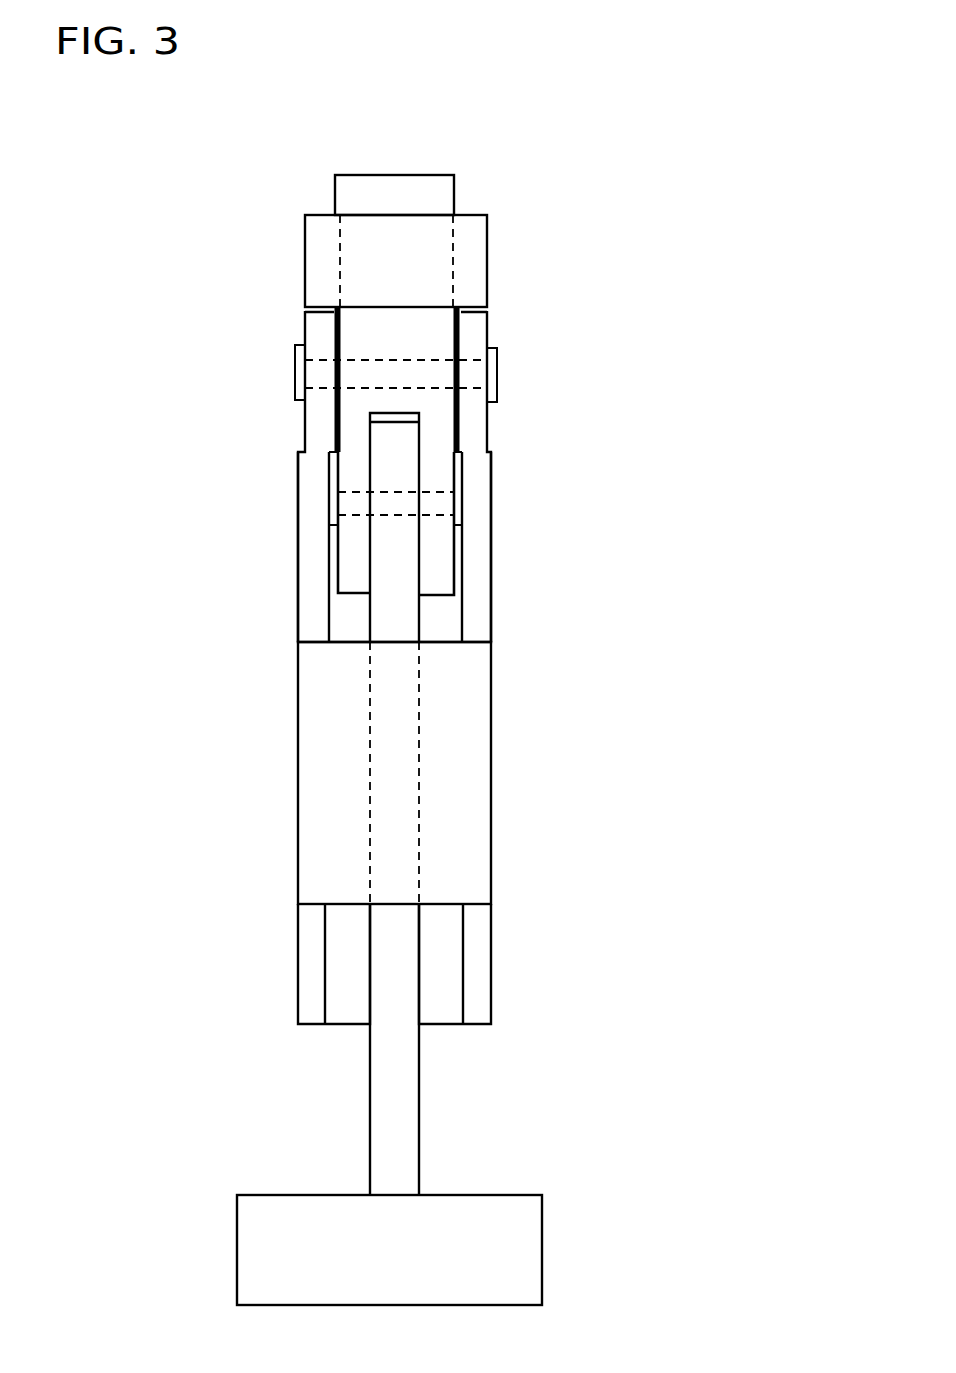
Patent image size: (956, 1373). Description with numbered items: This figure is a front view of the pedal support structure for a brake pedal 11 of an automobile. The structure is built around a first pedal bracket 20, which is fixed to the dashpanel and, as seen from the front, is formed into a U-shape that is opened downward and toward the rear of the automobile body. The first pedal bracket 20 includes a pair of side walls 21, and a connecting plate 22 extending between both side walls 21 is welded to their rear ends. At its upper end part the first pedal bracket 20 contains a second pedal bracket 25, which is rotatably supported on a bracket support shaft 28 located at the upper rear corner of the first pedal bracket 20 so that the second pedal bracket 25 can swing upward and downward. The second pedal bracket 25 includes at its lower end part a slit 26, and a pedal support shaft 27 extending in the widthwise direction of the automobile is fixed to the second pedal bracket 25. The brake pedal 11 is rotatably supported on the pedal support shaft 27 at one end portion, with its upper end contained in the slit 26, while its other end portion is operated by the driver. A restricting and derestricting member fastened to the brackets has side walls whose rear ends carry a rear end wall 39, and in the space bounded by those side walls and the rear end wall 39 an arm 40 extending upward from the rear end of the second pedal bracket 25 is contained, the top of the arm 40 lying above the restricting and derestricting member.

The arm 40 is at (403, 190).
The rear end wall 39 is at (420, 253).
The bracket support shaft 28 is at (405, 360).
The slit 26 is at (421, 466).
The pedal support shaft 27 is at (434, 492).
The second pedal bracket 25 is at (352, 441).
The side walls 21 is at (308, 573).
The connecting plate 22 is at (491, 747).
The first pedal bracket 20 is at (409, 662).
The brake pedal 11 is at (400, 1089).